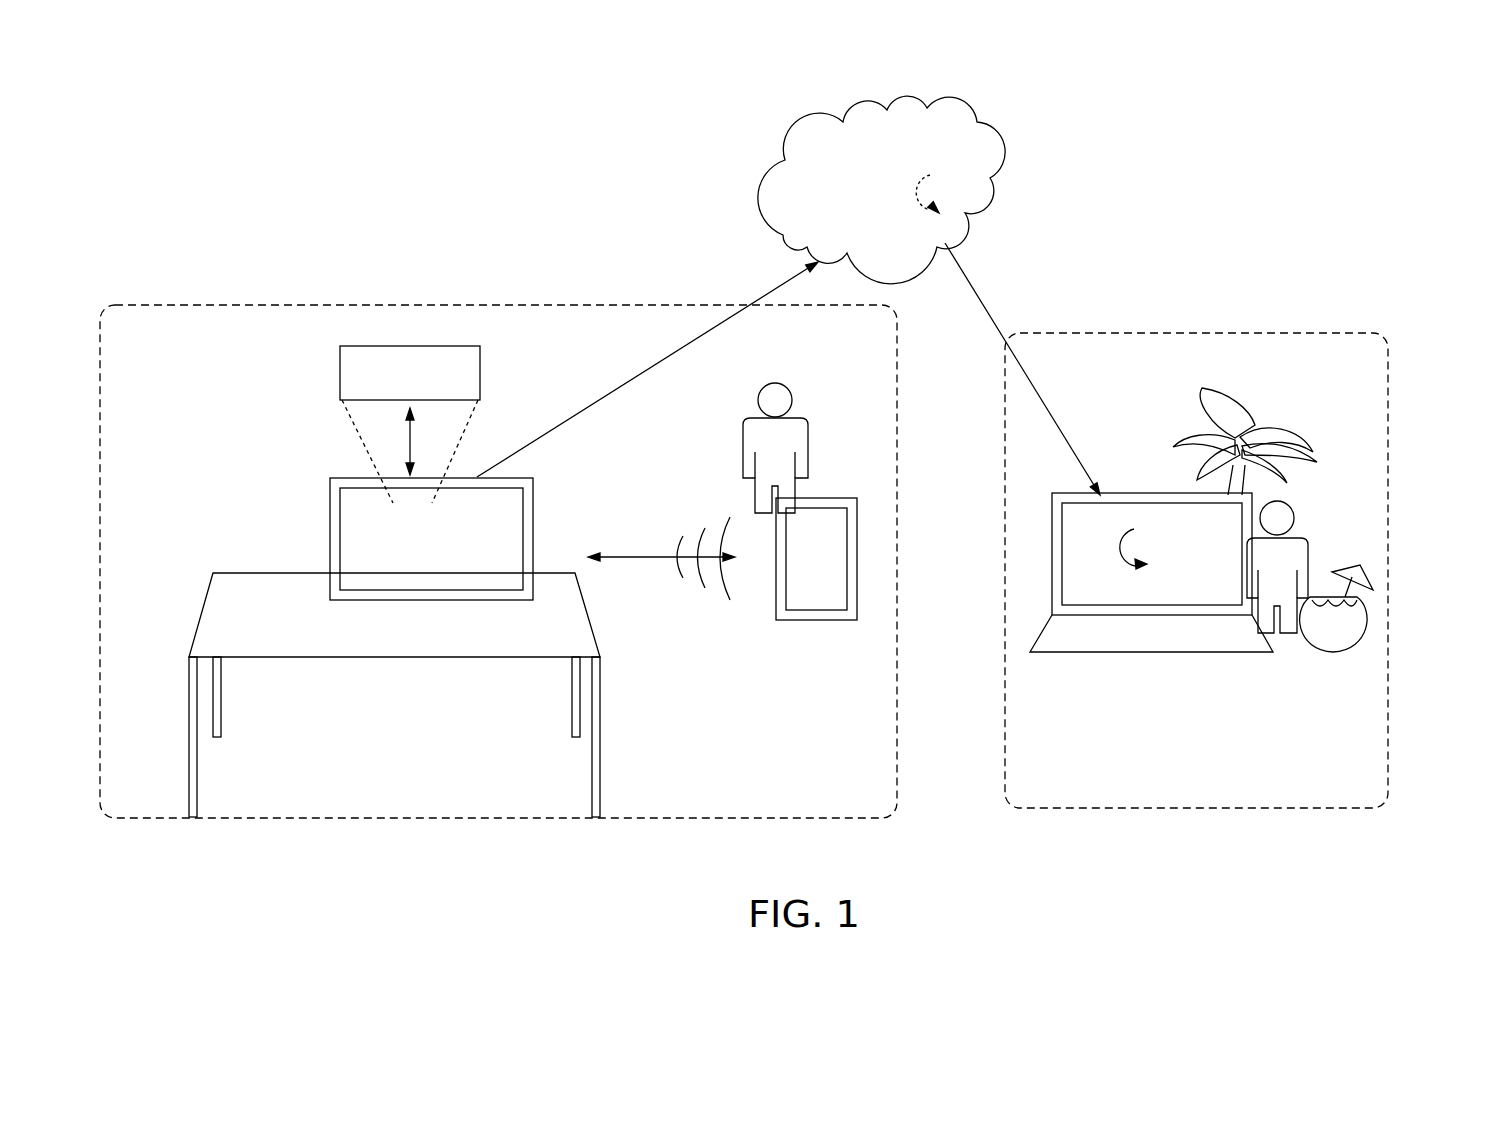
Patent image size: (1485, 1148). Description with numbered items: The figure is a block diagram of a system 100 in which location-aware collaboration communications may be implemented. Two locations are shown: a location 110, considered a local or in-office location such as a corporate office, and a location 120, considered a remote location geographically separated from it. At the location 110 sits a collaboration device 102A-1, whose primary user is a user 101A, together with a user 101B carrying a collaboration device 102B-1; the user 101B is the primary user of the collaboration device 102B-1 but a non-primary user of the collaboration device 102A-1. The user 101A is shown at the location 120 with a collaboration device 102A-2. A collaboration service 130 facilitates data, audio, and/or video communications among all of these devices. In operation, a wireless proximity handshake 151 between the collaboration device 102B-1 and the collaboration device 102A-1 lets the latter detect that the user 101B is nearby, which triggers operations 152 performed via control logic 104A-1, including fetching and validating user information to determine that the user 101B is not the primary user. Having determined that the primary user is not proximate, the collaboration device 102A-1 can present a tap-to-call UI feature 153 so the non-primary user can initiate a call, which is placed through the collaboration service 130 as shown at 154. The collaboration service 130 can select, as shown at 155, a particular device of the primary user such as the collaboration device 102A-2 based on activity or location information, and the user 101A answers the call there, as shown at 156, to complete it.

The system 100 is at (437, 115).
The collaboration service 130 is at (762, 174).
The select operation 155 is at (940, 194).
The call initiation 154 is at (773, 290).
The location 110 is at (512, 561).
The control logic 104A-1 is at (340, 358).
The fetching/validating operations 152 is at (400, 448).
The collaboration device 102A-1 is at (352, 512).
The UI button for shoulder tap functionality 153 is at (431, 539).
The wireless proximity handshake 151 is at (630, 557).
The user 101B is at (803, 422).
The collaboration device 102B-1 is at (822, 622).
The location 120 is at (1235, 570).
The collaboration device 102A-2 is at (1183, 653).
The answer operation 156 is at (1151, 566).
The user 101A is at (1312, 553).